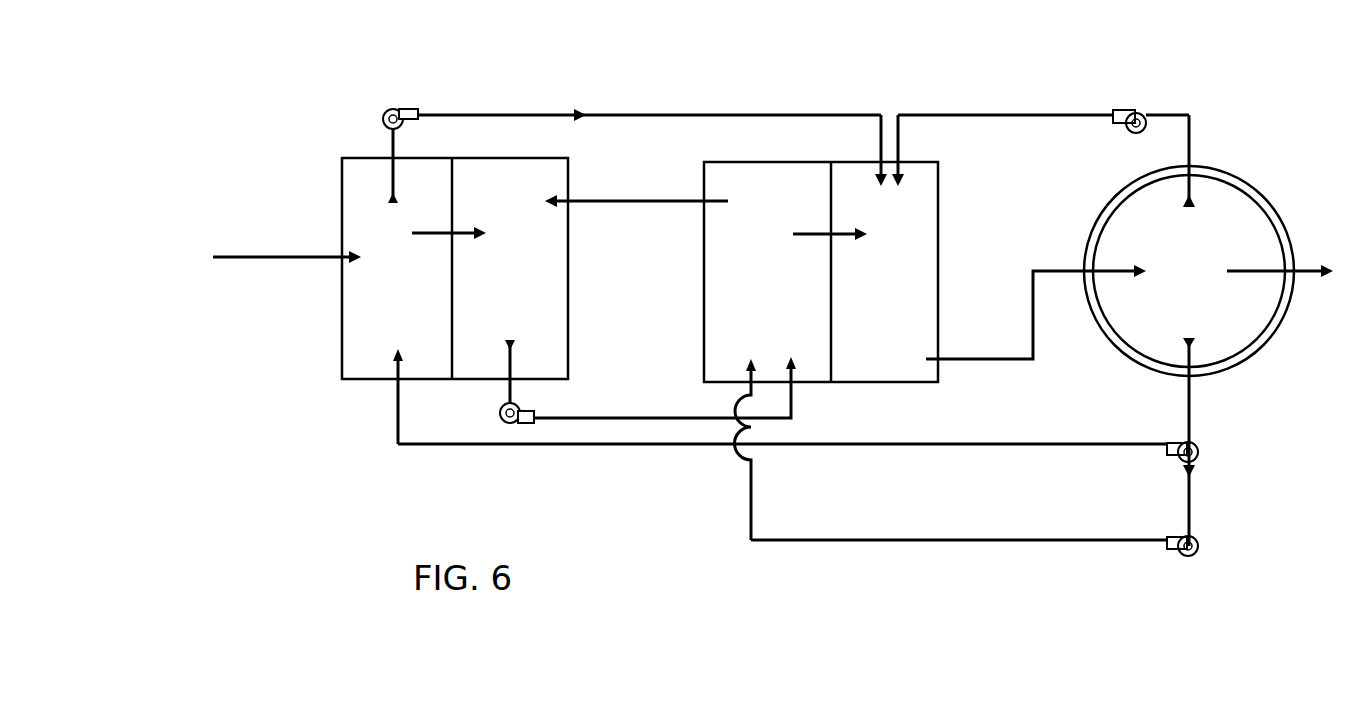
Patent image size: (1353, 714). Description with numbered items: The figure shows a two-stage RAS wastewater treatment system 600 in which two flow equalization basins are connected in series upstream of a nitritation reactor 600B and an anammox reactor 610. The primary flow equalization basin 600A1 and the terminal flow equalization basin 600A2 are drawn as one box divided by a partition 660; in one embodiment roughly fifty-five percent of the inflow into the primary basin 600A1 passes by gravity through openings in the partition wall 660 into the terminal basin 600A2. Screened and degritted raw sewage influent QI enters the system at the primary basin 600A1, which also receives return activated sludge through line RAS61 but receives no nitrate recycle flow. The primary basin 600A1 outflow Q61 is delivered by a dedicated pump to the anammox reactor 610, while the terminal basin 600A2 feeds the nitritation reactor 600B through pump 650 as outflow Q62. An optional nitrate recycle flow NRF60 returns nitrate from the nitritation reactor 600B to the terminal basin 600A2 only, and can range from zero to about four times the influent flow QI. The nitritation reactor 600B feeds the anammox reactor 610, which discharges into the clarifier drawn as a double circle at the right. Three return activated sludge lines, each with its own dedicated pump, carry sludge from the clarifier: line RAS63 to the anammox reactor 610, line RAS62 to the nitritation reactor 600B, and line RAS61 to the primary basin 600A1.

The two-stage RAS wastewater treatment system 600 is at (313, 363).
The primary flow equalization basin 600A1 is at (425, 268).
The terminal flow equalization basin 600A2 is at (596, 247).
The nitritation reactor 600B is at (806, 272).
The anammox reactor 610 is at (880, 203).
The pump 650 is at (503, 418).
The partition 660 is at (440, 352).
The influent wastewater flow QI is at (268, 253).
The primary FEB outflow Q61 is at (655, 107).
The terminal FEB outflow Q62 is at (792, 410).
The nitrate recycle flow NRF60 is at (617, 205).
The return activated sludge line RAS61 is at (1087, 439).
The return activated sludge line RAS62 is at (988, 554).
The return activated sludge line RAS63 is at (1055, 108).